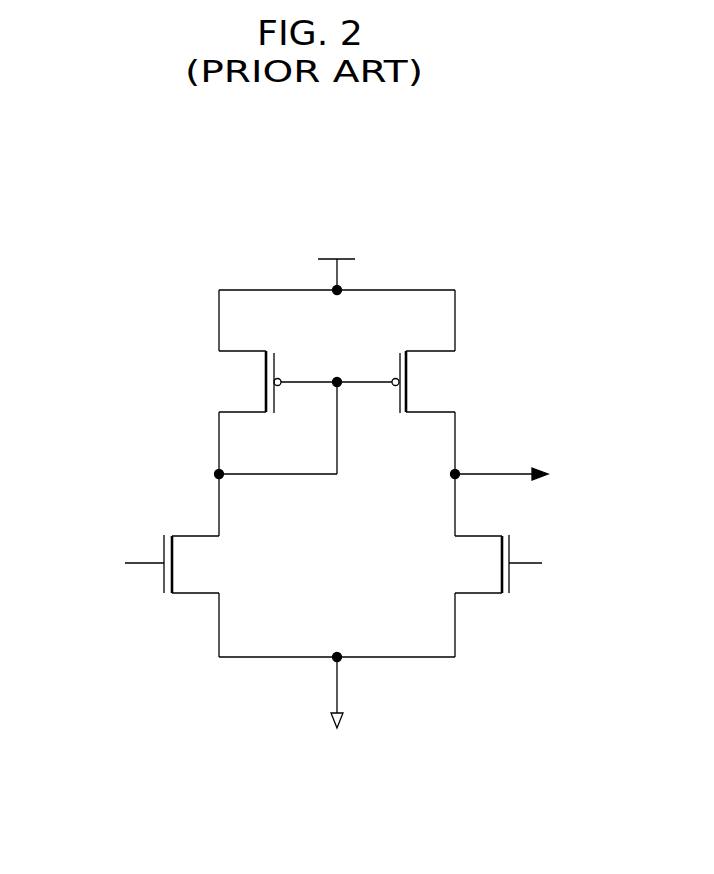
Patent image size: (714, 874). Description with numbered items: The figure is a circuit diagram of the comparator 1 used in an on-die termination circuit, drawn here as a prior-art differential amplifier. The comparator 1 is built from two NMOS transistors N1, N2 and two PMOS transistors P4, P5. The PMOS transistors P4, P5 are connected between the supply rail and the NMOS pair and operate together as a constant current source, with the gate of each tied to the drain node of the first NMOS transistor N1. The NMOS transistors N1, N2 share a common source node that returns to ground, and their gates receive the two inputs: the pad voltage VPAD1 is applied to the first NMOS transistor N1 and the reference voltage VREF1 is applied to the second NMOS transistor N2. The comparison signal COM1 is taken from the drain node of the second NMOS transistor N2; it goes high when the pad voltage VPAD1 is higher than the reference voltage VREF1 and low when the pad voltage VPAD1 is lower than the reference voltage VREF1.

The comparator 1 is at (163, 230).
The PMOS transistor P4 is at (264, 382).
The PMOS transistor P5 is at (410, 382).
The NMOS transistor N1 is at (208, 564).
The NMOS transistor N2 is at (465, 564).
The pad voltage VPAD1 is at (93, 565).
The reference voltage VREF1 is at (574, 567).
The comparison signal COM1 is at (543, 475).